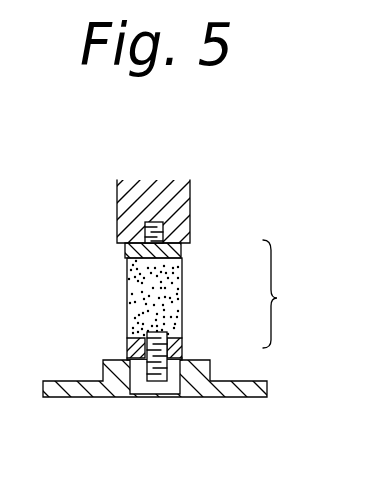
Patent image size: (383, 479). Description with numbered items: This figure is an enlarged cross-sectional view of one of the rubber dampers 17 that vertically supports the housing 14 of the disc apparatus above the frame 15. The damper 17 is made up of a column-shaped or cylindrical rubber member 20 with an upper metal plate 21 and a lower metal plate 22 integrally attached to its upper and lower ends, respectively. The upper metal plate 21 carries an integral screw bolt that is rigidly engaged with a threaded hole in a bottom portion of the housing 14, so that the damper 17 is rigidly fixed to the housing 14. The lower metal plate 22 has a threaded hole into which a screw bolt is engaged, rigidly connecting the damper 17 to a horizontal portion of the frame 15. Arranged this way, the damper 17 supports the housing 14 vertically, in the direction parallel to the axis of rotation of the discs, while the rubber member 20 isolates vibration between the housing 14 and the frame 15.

The housing 14 is at (190, 204).
The frame 15 is at (70, 381).
The rubber damper 17 is at (291, 294).
The cylindrical rubber member 20 is at (182, 302).
The upper metal plate 21 is at (182, 250).
The lower metal plate 22 is at (183, 350).